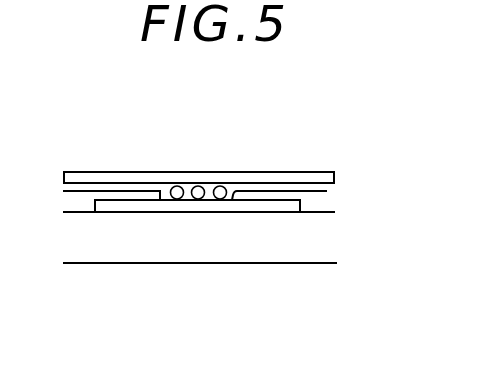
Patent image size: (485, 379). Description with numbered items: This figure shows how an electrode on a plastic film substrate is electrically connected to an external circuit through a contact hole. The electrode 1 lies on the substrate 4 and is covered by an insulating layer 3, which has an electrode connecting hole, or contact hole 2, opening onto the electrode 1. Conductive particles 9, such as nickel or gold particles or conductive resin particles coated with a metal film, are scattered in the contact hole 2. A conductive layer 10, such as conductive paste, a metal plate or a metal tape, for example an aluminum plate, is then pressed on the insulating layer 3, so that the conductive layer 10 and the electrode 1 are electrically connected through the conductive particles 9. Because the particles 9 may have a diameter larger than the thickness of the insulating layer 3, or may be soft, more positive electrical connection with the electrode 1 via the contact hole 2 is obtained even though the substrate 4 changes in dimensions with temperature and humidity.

The electrode 1 is at (141, 204).
The contact hole 2 is at (228, 185).
The insulating layer 3 is at (322, 202).
The substrate 4 is at (252, 248).
The conductive particles 9 is at (199, 185).
The conductive layer 10 is at (285, 177).